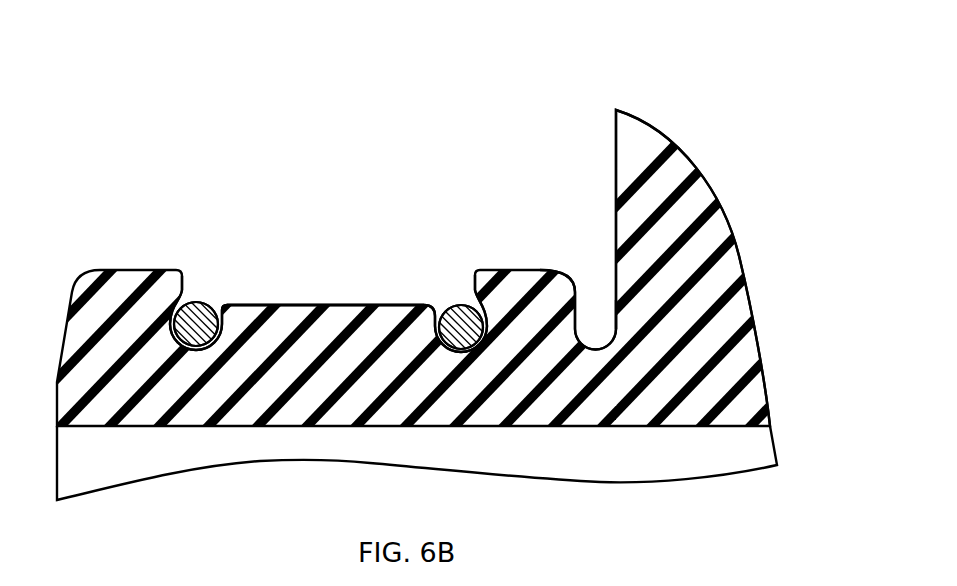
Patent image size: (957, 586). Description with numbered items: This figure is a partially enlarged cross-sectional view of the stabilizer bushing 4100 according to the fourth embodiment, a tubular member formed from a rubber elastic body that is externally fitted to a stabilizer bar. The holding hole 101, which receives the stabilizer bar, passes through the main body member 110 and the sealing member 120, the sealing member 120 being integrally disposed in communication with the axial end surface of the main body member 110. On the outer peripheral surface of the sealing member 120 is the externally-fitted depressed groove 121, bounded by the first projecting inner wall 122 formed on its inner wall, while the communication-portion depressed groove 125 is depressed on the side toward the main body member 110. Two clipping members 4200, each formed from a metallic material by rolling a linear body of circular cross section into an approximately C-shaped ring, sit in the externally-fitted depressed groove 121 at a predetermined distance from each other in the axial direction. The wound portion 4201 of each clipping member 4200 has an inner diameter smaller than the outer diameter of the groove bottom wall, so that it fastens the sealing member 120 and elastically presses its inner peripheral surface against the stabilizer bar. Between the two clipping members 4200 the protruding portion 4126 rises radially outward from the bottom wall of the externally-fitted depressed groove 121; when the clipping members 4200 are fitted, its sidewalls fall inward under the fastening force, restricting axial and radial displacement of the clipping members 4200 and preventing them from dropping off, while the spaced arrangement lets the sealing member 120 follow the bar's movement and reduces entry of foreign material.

The stabilizer bushing 4100 is at (754, 92).
The sealing member 120 is at (455, 172).
The main body member 110 is at (705, 195).
The externally-fitted depressed groove 121 is at (357, 286).
The protruding portion 4126 is at (293, 310).
The first projecting inner wall 122 is at (182, 279).
The wound portion 4201 is at (210, 312).
The clipping member 4200 is at (328, 268).
The communication-portion depressed groove 125 is at (603, 343).
The holding hole 101 is at (175, 427).